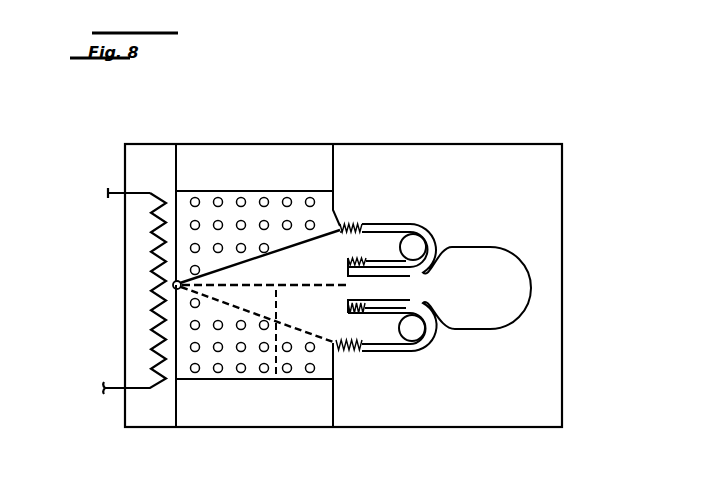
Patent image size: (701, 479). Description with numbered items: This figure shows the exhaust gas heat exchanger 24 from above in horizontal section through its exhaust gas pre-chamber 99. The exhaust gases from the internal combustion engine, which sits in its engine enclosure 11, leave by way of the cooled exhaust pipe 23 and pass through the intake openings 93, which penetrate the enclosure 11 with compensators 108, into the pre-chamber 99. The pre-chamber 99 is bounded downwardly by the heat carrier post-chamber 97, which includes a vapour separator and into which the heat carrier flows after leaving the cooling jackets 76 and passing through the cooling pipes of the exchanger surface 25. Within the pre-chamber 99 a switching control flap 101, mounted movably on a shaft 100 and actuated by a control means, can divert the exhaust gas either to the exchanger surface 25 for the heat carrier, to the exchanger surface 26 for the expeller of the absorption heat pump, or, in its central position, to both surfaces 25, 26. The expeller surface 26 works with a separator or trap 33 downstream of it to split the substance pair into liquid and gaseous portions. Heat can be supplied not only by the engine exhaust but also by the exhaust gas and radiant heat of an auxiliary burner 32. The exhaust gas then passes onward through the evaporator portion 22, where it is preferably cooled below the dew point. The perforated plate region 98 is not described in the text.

The engine enclosure 11 is at (545, 209).
The evaporator portion for exhaust gas 22 is at (152, 278).
The cooled exhaust pipe 23 is at (418, 246).
The exhaust gas heat exchanger 24 is at (325, 321).
The exchanger surface 25 is at (195, 198).
The exchanger surface for the expeller 26 is at (218, 350).
The auxiliary burner 32 is at (513, 273).
The separator or trap 33 is at (186, 412).
The cooling jackets 76 is at (398, 224).
The intake openings 93 is at (359, 255).
The heat carrier post-chamber 97 is at (242, 160).
The perforated plate 98 is at (254, 342).
The exhaust gas pre-chamber 99 is at (325, 275).
The shaft 100 is at (167, 306).
The switching control flap 101 is at (300, 246).
The compensators 108 is at (344, 349).